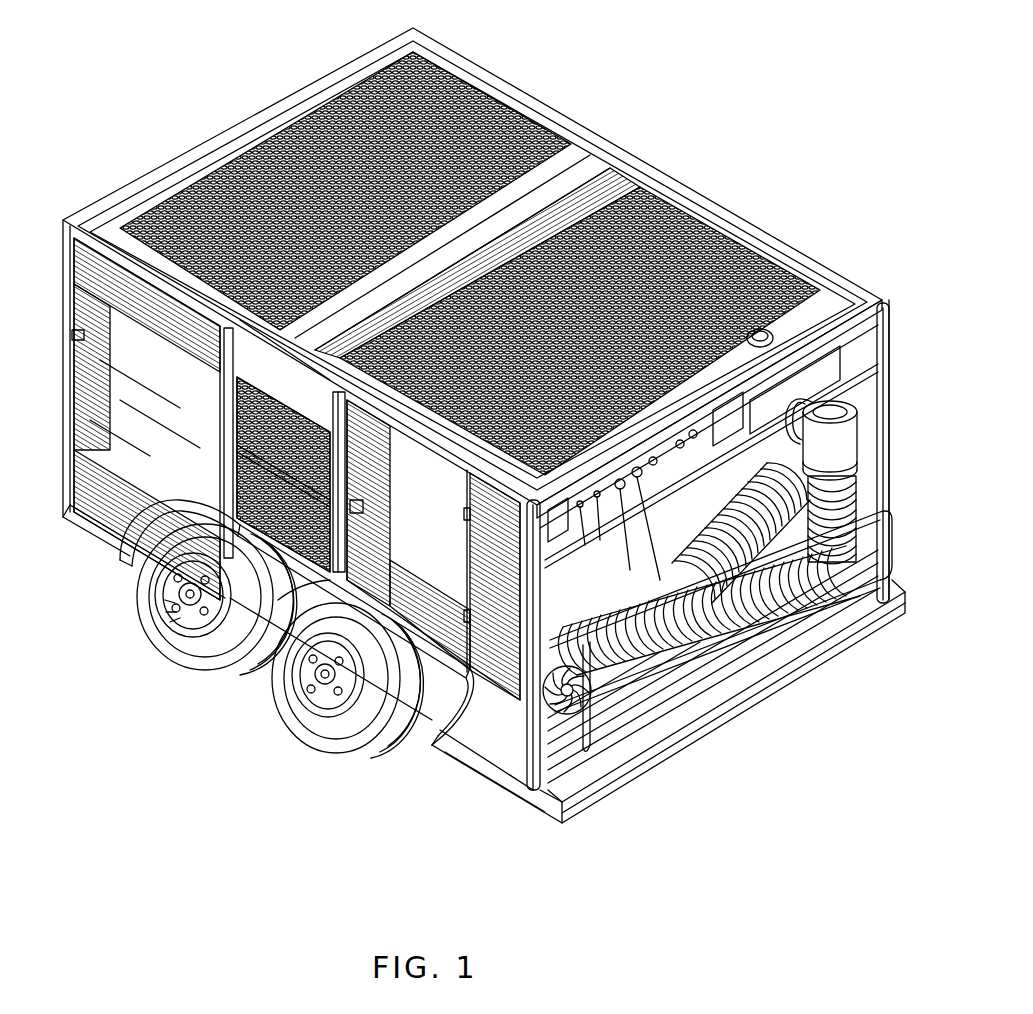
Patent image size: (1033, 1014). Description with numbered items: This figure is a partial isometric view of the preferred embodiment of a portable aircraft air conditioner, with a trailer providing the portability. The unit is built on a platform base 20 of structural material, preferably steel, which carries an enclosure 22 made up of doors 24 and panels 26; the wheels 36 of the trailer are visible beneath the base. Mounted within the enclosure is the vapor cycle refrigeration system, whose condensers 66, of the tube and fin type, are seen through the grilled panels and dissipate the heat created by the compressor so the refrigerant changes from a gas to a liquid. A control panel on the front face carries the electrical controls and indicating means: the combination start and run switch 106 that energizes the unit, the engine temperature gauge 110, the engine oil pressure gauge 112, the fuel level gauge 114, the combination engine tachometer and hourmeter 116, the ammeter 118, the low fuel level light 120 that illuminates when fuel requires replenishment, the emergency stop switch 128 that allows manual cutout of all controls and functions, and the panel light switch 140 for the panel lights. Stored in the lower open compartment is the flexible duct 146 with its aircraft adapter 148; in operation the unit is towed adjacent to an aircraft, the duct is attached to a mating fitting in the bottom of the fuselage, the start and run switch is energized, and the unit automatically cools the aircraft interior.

The platform base 20 is at (118, 557).
The enclosure 22 is at (360, 53).
The doors 24 is at (122, 270).
The panels 26 is at (213, 277).
The wheels 36 is at (163, 637).
The condenser 66 is at (563, 145).
The combination start and run switch 106 is at (720, 733).
The engine temperature gauge 110 is at (880, 272).
The engine oil pressure gauge 112 is at (820, 673).
The fuel level gauge 114 is at (513, 803).
The combination engine tachometer and hourmeter 116 is at (838, 290).
The ammeter 118 is at (480, 780).
The low fuel level light 120 is at (647, 780).
The emergency stop switch 128 is at (593, 800).
The panel light switch 140 is at (750, 717).
The flexible duct 146 is at (855, 645).
The aircraft adapter 148 is at (858, 468).